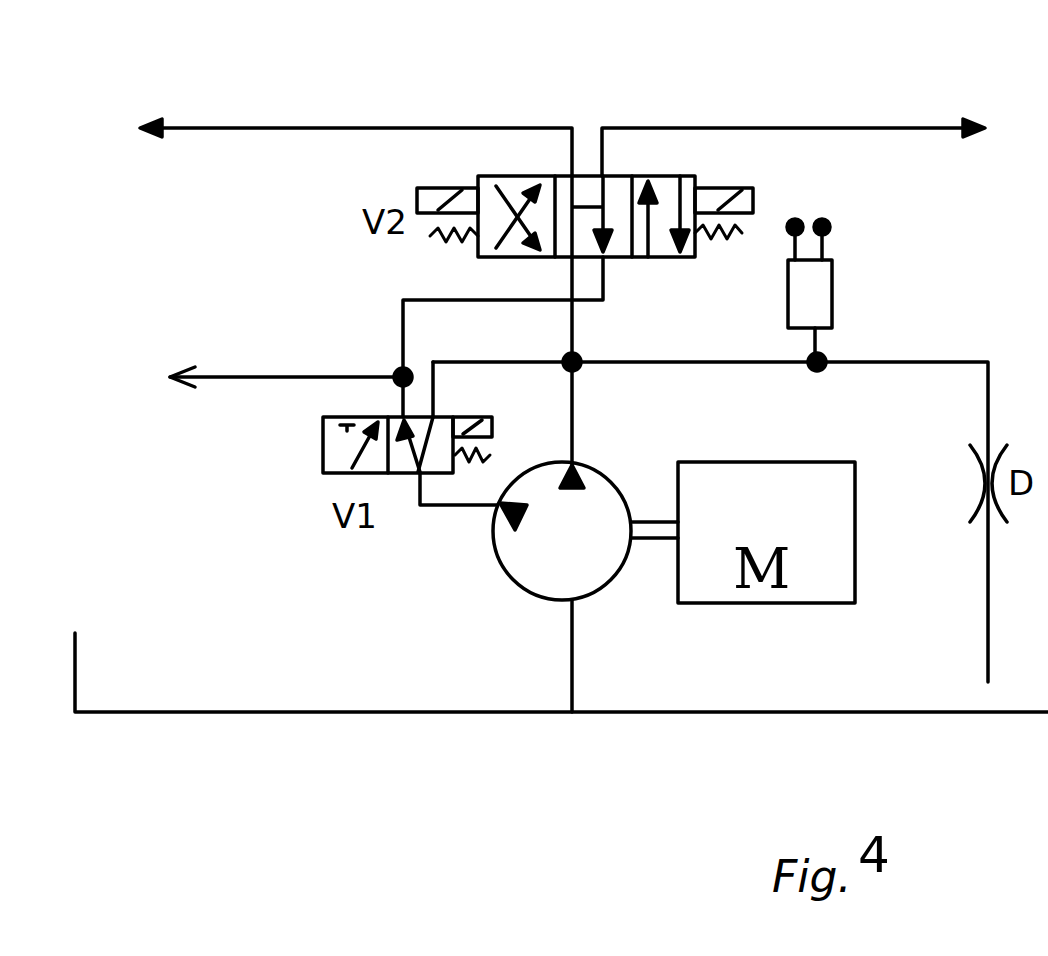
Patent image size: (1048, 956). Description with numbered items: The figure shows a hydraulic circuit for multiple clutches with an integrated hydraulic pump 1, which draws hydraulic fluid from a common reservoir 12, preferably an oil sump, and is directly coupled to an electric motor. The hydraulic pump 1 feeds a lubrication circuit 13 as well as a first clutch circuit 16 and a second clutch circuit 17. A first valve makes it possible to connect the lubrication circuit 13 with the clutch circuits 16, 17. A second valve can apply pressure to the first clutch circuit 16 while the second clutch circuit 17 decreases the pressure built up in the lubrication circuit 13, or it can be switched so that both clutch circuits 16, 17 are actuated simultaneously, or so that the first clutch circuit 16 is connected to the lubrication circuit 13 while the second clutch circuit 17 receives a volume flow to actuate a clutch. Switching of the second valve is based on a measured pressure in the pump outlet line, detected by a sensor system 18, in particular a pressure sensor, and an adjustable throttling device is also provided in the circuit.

The hydraulic pump 1 is at (510, 578).
The reservoir 12 is at (573, 453).
The lubrication circuit 13 is at (270, 388).
The first clutch circuit 16 is at (252, 128).
The second clutch circuit 17 is at (738, 125).
The sensor system 18 is at (832, 285).